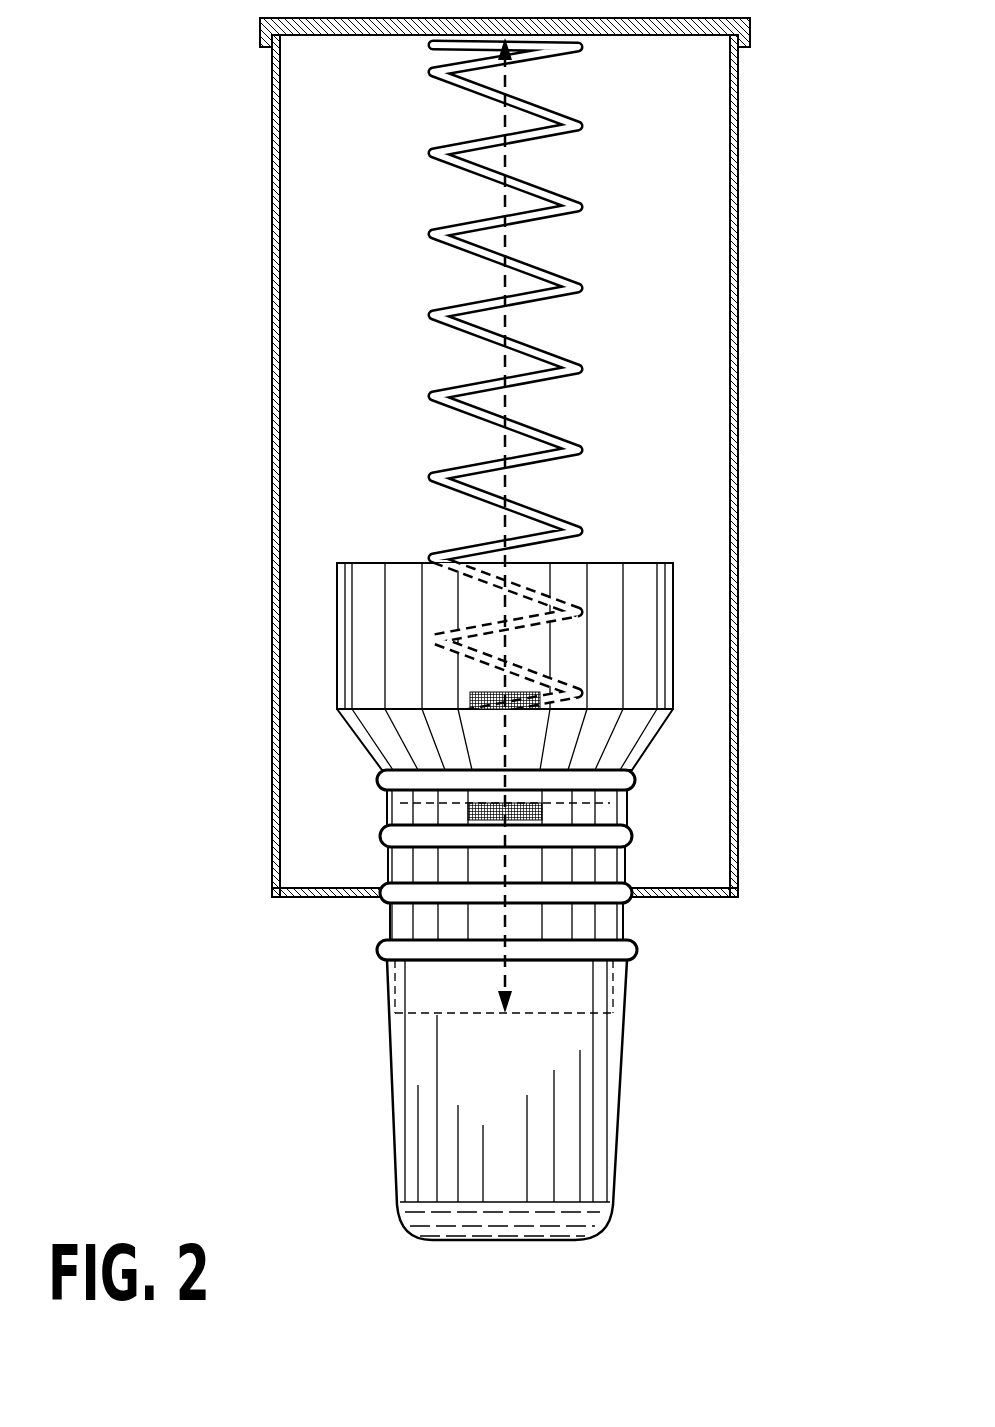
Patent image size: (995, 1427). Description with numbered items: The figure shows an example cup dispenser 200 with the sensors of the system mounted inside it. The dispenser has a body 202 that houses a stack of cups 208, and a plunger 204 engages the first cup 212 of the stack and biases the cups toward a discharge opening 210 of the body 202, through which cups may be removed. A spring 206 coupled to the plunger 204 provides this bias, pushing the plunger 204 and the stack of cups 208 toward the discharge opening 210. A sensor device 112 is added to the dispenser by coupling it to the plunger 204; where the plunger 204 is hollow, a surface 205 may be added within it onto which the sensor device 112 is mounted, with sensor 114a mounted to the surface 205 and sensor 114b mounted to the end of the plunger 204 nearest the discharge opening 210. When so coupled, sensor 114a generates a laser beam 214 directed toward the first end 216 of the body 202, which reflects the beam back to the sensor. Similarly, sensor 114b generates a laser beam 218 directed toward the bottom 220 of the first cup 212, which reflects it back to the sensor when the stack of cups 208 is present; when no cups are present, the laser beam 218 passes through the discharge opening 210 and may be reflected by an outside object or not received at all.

The cup dispenser 200 is at (155, 120).
The body 202 is at (555, 457).
The plunger 204 is at (673, 652).
The surface 205 is at (672, 702).
The spring 206 is at (486, 328).
The stack of cups 208 is at (646, 857).
The discharge opening 210 is at (645, 918).
The first cup 212 is at (630, 795).
The laser beam 214 is at (500, 460).
The first end 216 is at (358, 35).
The laser beam 218 is at (518, 934).
The bottom 220 is at (434, 1022).
The sensor device 112 is at (511, 858).
The sensor 114a is at (470, 697).
The sensor 114b is at (470, 808).